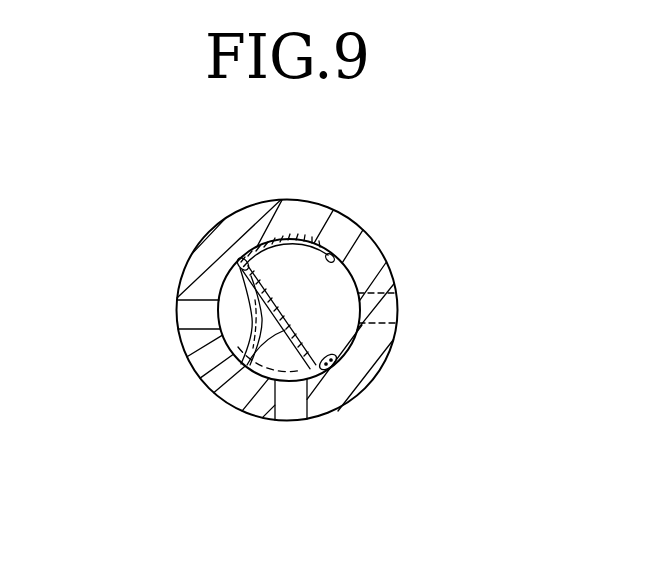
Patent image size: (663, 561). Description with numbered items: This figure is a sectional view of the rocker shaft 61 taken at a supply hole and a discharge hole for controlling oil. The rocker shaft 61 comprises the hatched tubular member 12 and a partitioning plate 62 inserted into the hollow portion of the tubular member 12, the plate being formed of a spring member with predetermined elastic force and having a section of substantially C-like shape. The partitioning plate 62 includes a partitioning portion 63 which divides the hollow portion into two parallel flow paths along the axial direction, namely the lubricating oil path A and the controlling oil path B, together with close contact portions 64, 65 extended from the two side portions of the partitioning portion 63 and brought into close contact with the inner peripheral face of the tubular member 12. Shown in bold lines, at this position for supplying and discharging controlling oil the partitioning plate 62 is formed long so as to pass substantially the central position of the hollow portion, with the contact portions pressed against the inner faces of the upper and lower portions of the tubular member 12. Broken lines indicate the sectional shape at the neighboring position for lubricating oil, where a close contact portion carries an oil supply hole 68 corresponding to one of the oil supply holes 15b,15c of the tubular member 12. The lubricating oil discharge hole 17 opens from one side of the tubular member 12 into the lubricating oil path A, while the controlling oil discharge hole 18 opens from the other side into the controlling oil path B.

The rocker shaft 61 is at (240, 208).
The tubular member 12 is at (190, 254).
The controlling oil discharge hole 18 is at (186, 311).
The controlling oil path B is at (232, 329).
The partitioning portion 63 is at (210, 393).
The oil supply hole 68 is at (260, 373).
The oil supply holes 15b,15c is at (292, 421).
The close contact portion 65 is at (334, 364).
The lubricating oil discharge hole 17 is at (402, 305).
The lubricating oil path A is at (318, 291).
The close contact portion 64 is at (318, 242).
The partitioning plate 62 is at (272, 274).